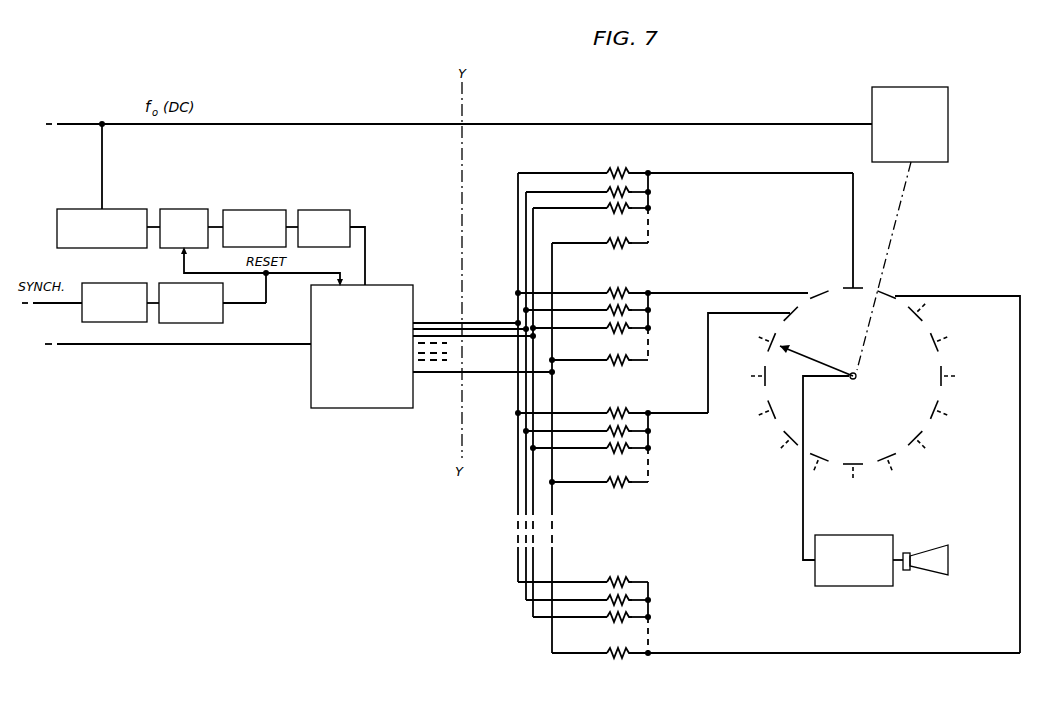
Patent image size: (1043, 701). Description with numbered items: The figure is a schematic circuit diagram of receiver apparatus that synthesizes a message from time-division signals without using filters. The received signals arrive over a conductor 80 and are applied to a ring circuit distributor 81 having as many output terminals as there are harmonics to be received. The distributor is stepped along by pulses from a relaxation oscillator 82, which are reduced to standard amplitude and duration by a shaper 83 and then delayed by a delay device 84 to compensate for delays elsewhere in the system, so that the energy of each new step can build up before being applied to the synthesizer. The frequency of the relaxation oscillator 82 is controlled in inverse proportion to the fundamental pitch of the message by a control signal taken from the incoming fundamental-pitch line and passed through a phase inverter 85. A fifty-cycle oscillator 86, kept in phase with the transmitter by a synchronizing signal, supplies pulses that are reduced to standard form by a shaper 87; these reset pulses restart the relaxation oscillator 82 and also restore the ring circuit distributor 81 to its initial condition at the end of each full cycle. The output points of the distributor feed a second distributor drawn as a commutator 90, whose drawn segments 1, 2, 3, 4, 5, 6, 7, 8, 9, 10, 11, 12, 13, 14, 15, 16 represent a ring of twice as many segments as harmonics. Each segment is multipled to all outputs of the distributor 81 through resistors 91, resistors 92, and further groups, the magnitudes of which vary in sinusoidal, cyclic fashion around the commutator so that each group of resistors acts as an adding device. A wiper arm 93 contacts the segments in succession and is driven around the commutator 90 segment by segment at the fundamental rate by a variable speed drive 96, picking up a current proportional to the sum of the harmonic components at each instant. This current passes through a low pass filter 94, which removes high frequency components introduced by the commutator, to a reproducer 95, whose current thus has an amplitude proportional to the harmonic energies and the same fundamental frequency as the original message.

The conductor 80 is at (253, 346).
The ring circuit distributor 81 is at (345, 409).
The relaxation oscillator 82 is at (180, 207).
The shaper 83 is at (242, 208).
The delay device 84 is at (314, 208).
The phase inverter 85 is at (118, 207).
The 50-cycle oscillator 86 is at (112, 322).
The shaper 87 is at (186, 323).
The commutator 90 is at (870, 423).
The resistors 91 is at (650, 175).
The resistors 92 is at (650, 295).
The wiper arm 93 is at (811, 359).
The low pass filter 94 is at (840, 587).
The reproducer 95 is at (935, 577).
The variable speed drive 96 is at (948, 148).
The commutator contact 1 is at (853, 298).
The commutator contact 2 is at (819, 302).
The commutator contact 3 is at (794, 318).
The commutator contact 4 is at (771, 340).
The commutator contact 5 is at (765, 376).
The commutator contact 6 is at (771, 412).
The commutator contact 7 is at (787, 439).
The commutator contact 8 is at (816, 457).
The commutator contact 9 is at (853, 463).
The commutator contact 10 is at (888, 457).
The commutator contact 11 is at (916, 439).
The commutator contact 12 is at (933, 412).
The commutator contact 13 is at (939, 376).
The commutator contact 14 is at (933, 340).
The commutator contact 15 is at (916, 312).
The commutator contact 16 is at (885, 302).